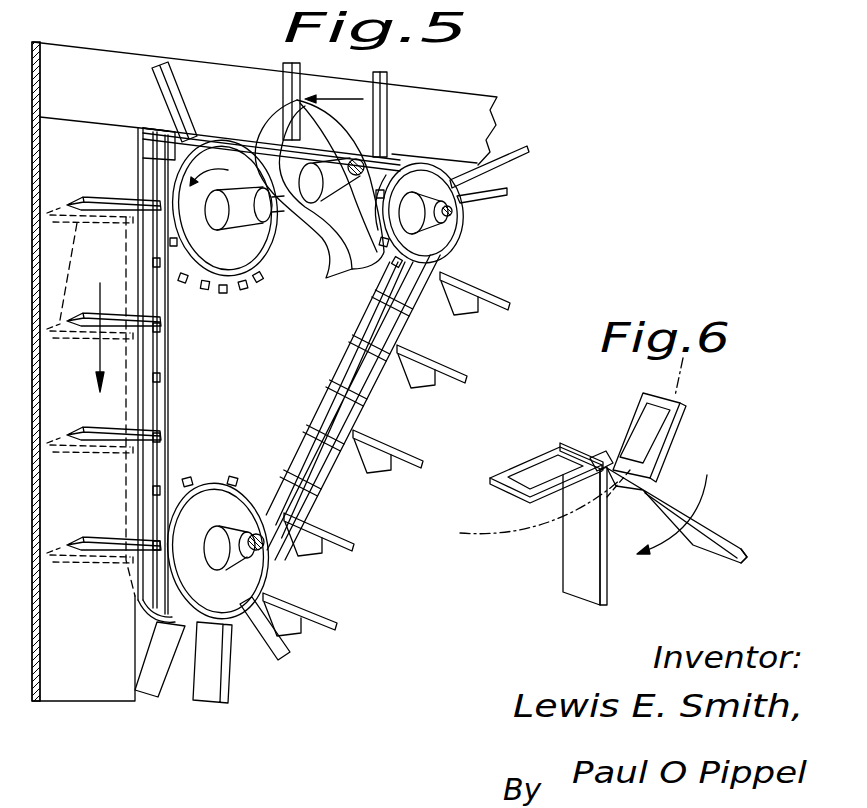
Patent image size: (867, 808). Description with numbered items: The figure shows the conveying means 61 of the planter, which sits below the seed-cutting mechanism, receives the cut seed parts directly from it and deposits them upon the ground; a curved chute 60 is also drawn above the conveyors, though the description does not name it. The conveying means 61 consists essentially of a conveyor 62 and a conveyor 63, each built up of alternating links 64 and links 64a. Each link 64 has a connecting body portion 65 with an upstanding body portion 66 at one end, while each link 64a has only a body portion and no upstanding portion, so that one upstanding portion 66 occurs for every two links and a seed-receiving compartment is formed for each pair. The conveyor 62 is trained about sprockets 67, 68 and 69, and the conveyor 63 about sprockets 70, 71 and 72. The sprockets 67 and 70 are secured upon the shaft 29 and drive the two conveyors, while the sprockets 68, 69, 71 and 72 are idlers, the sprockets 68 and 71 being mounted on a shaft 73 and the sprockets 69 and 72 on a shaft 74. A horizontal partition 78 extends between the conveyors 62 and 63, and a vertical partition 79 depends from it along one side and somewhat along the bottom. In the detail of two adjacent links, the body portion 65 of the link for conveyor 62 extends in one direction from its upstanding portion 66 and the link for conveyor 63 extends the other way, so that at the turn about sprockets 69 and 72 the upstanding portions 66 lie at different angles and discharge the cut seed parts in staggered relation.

In FIG. 5, the shaft 29 is at (275, 242).
In FIG. 5, the curved deflector chute 60 is at (343, 280).
In FIG. 5, the conveying means 61 is at (462, 354).
In FIG. 5, the conveyor 62 is at (330, 402).
In FIG. 6, the conveyor 62 is at (563, 558).
In FIG. 5, the conveyor 63 is at (364, 410).
In FIG. 6, the conveyor 63 is at (712, 522).
In FIG. 5, the link 64 is at (170, 406).
In FIG. 6, the link 64 is at (522, 468).
In FIG. 5, the link 64a is at (330, 418).
In FIG. 6, the link 64a is at (670, 443).
In FIG. 6, the connecting body portion 65 is at (681, 403).
In FIG. 5, the upstanding body portion 66 is at (372, 70).
In FIG. 6, the upstanding body portion 66 is at (732, 545).
In FIG. 5, the sprocket 67 is at (182, 290).
In FIG. 5, the sprocket 68 is at (367, 270).
In FIG. 5, the sprocket 69 is at (173, 483).
In FIG. 6, the sprocket 69 is at (500, 533).
In FIG. 5, the sprocket 70 is at (248, 258).
In FIG. 5, the sprocket 71 is at (441, 246).
In FIG. 5, the sprocket 72 is at (208, 493).
In FIG. 5, the shaft 73 is at (454, 210).
In FIG. 5, the shaft 74 is at (250, 530).
In FIG. 5, the horizontal partition 78 is at (209, 76).
In FIG. 5, the vertical partition 79 is at (86, 684).